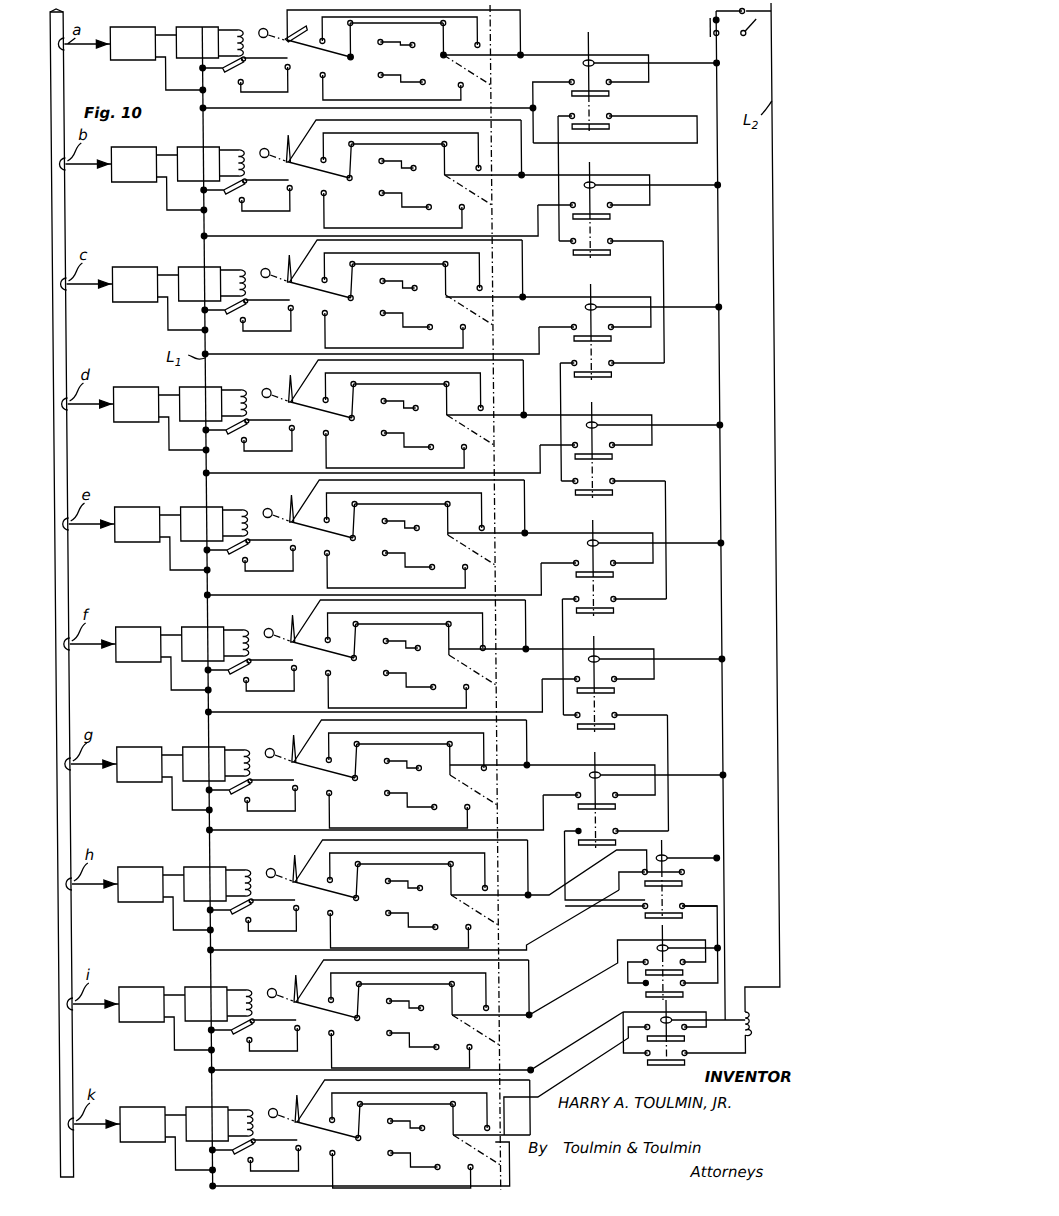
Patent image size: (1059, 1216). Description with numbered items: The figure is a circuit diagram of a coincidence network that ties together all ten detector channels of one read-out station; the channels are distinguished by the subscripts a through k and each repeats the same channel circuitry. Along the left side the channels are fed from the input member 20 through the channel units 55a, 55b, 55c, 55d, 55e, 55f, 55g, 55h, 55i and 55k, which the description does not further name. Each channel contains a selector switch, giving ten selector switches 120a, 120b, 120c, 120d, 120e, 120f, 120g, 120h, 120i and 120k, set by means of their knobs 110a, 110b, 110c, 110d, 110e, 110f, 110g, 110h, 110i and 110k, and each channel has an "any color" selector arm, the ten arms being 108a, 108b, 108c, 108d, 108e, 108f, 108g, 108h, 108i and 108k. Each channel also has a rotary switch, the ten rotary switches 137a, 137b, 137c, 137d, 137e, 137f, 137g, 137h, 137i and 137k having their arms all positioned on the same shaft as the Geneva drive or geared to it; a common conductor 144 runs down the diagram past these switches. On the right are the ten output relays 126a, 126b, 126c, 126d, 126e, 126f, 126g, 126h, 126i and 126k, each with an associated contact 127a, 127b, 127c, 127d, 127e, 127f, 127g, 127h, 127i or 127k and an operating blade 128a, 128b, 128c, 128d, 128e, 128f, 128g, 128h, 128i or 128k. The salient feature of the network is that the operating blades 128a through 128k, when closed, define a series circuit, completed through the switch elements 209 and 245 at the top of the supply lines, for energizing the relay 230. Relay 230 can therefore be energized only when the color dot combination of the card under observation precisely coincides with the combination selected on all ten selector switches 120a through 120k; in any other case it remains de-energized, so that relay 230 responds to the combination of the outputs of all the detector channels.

The record bar 20 is at (50, 95).
The amplifier unit 55a is at (128, 48).
The amplifier unit 55b is at (129, 158).
The amplifier unit 55c is at (135, 301).
The amplifier unit 55d is at (136, 421).
The amplifier unit 55e is at (138, 541).
The amplifier unit 55f is at (139, 661).
The amplifier unit 55g is at (140, 781).
The amplifier unit 55h is at (141, 901).
The amplifier unit 55i is at (142, 1021).
The amplifier unit 55k is at (143, 1141).
The knob 110a is at (260, 31).
The knob 110b is at (259, 148).
The knob 110c is at (252, 263).
The knob 110d is at (253, 383).
The knob 110e is at (254, 503).
The knob 110f is at (255, 623).
The knob 110g is at (257, 743).
The knob 110h is at (258, 863).
The knob 110i is at (259, 983).
The knob 110k is at (260, 1103).
The "any color" selector arm 108a is at (308, 28).
The "any color" selector arm 108b is at (306, 146).
The "any color" selector arm 108c is at (307, 266).
The "any color" selector arm 108d is at (308, 386).
The "any color" selector arm 108e is at (309, 506).
The "any color" selector arm 108f is at (310, 626).
The "any color" selector arm 108g is at (311, 746).
The "any color" selector arm 108h is at (313, 866).
The "any color" selector arm 108i is at (314, 986).
The "any color" selector arm 108k is at (315, 1106).
The selector switch 120a is at (395, 71).
The selector switch 120b is at (392, 184).
The selector switch 120c is at (398, 283).
The selector switch 120d is at (399, 403).
The selector switch 120e is at (400, 523).
The selector switch 120f is at (401, 643).
The selector switch 120g is at (402, 763).
The selector switch 120h is at (403, 883).
The selector switch 120i is at (404, 1003).
The selector switch 120k is at (405, 1123).
The rotary switch 137a is at (452, 78).
The rotary switch 137b is at (452, 200).
The rotary switch 137c is at (456, 310).
The rotary switch 137d is at (457, 430).
The rotary switch 137e is at (458, 550).
The rotary switch 137f is at (459, 670).
The rotary switch 137g is at (460, 790).
The rotary switch 137h is at (461, 910).
The rotary switch 137i is at (462, 1030).
The rotary switch 137k is at (463, 1150).
The output relay 126a is at (592, 61).
The output relay 126b is at (592, 183).
The output relay 126c is at (653, 327).
The output relay 126d is at (654, 445).
The output relay 126e is at (655, 563).
The output relay 126f is at (656, 679).
The output relay 126g is at (657, 795).
The output relay 126h is at (664, 859).
The output relay 126i is at (664, 948).
The output relay 126k is at (671, 1020).
The contact 127a is at (608, 94).
The contact 127b is at (608, 217).
The contact 127c is at (603, 338).
The contact 127d is at (605, 456).
The contact 127e is at (605, 574).
The contact 127f is at (606, 690).
The contact 127g is at (607, 806).
The contact 127h is at (674, 884).
The contact 127i is at (674, 972).
The contact 127k is at (638, 1038).
The operating blade 128a is at (608, 127).
The operating blade 128b is at (608, 253).
The operating blade 128c is at (614, 374).
The operating blade 128d is at (615, 492).
The operating blade 128e is at (616, 610).
The operating blade 128f is at (616, 726).
The operating blade 128g is at (618, 842).
The operating blade 128h is at (637, 915).
The operating blade 128i is at (637, 996).
The operating blade 128k is at (638, 1062).
The conductor 144 is at (490, 37).
The switch 209 is at (709, 27).
The switch 245 is at (756, 30).
The relay 230 is at (738, 1024).